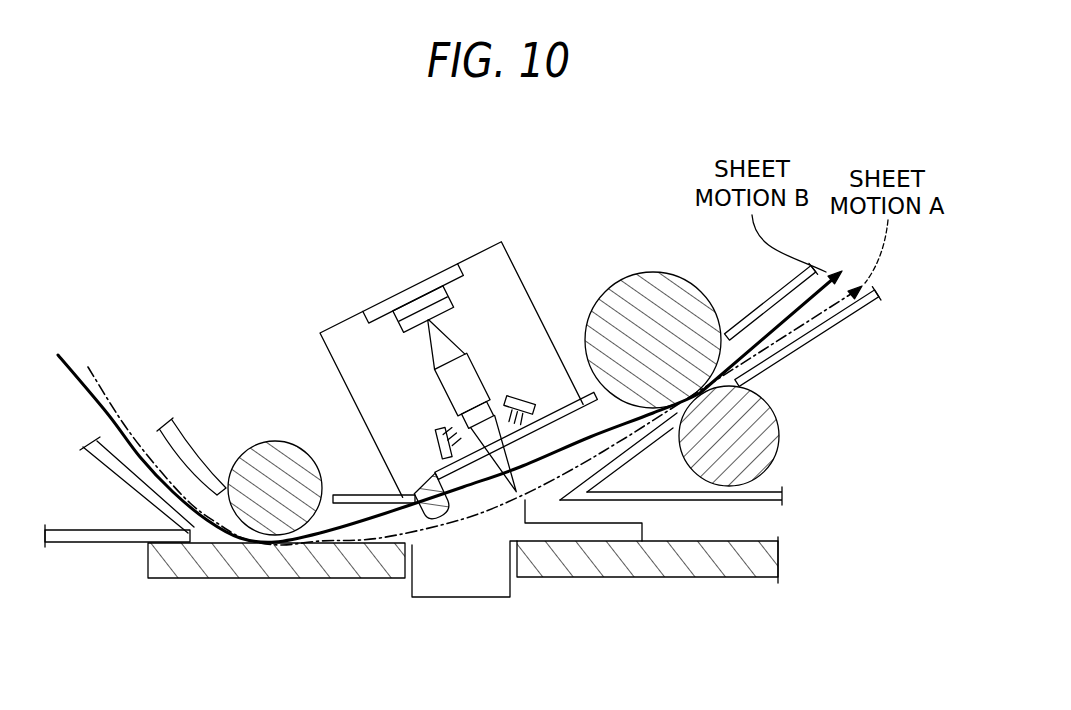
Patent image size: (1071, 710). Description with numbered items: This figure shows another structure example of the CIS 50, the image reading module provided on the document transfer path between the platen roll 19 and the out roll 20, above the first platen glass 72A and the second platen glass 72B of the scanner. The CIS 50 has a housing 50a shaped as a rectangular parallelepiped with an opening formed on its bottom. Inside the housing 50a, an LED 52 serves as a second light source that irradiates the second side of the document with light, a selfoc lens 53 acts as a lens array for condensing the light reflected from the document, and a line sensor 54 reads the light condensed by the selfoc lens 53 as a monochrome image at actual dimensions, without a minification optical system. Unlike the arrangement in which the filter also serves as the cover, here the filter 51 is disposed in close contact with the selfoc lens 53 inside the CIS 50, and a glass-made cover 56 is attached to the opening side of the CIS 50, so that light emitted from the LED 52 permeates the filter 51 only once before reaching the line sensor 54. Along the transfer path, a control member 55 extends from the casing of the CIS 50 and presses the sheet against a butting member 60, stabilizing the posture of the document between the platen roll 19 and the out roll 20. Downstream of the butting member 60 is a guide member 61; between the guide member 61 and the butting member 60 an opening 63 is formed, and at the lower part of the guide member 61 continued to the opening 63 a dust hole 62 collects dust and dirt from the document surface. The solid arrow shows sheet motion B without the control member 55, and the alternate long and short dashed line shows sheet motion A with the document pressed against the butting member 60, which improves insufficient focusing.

The platen roll 19 is at (270, 447).
The out roll 20 is at (653, 273).
The CIS 50 is at (350, 312).
The housing 50a is at (483, 262).
The filter 51 is at (453, 408).
The LED 52 is at (437, 437).
The selfoc lens 53 is at (478, 375).
The line sensor 54 is at (393, 310).
The control member 55 is at (410, 505).
The glass-made cover 56 is at (425, 472).
The butting member 60 is at (462, 597).
The guide member 61 is at (697, 500).
The dust hole 62 is at (610, 512).
The opening 63 is at (547, 500).
The first platen glass 72A is at (745, 580).
The second platen glass 72B is at (232, 580).